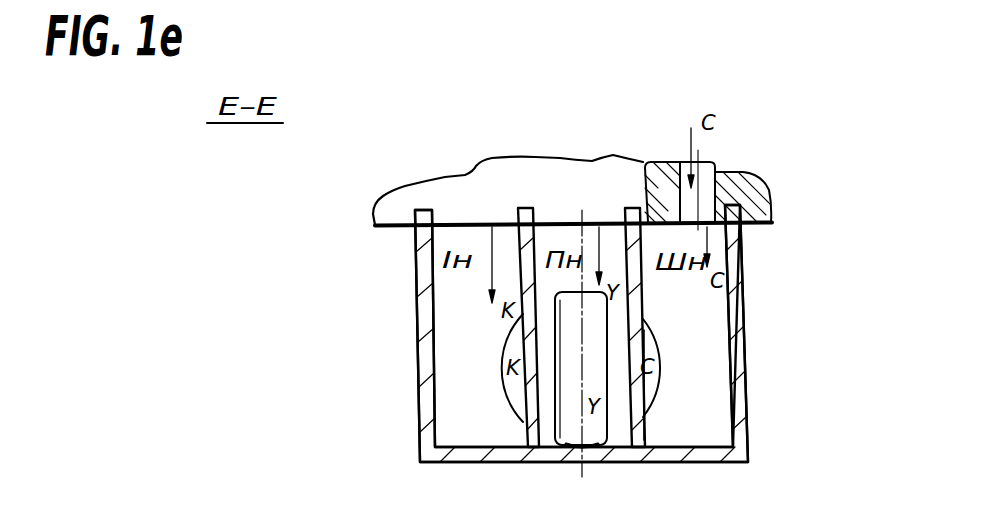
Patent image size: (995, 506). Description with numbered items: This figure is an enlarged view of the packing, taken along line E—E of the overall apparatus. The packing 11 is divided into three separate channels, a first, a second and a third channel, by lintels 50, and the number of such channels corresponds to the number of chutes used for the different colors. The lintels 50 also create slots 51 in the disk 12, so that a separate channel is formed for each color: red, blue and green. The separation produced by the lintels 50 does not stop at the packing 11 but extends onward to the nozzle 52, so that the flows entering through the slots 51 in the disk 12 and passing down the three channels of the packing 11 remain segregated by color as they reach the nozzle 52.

The packing 11 is at (423, 282).
The disk 12 is at (773, 208).
The lintels 50 is at (640, 297).
The slots 51 is at (734, 207).
The nozzle 52 is at (598, 377).